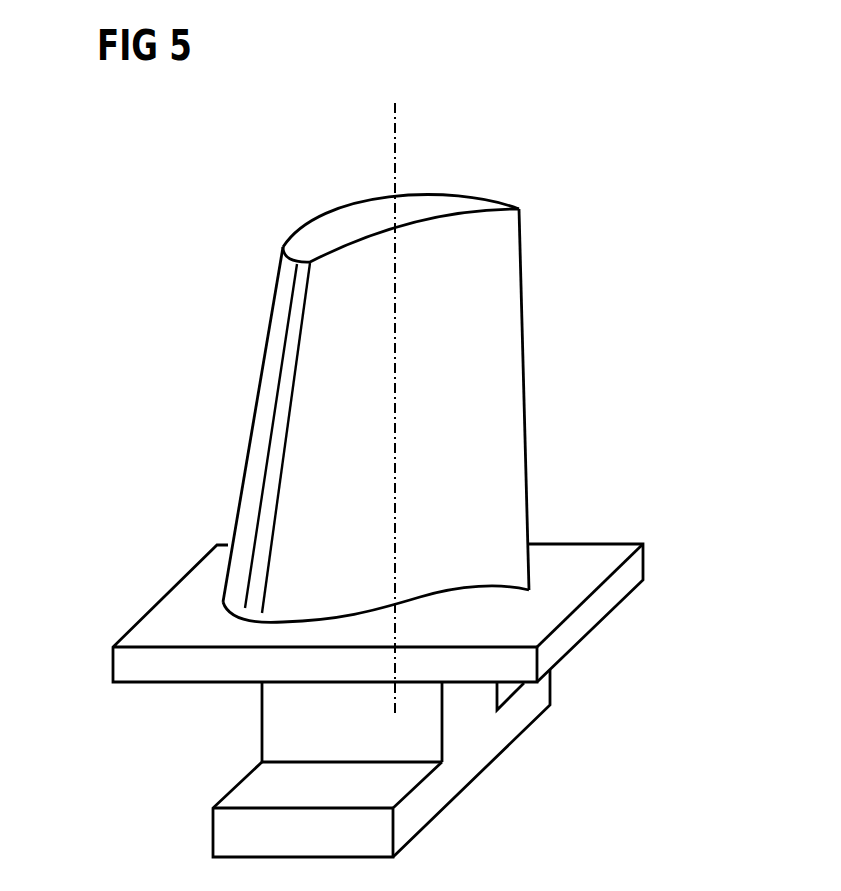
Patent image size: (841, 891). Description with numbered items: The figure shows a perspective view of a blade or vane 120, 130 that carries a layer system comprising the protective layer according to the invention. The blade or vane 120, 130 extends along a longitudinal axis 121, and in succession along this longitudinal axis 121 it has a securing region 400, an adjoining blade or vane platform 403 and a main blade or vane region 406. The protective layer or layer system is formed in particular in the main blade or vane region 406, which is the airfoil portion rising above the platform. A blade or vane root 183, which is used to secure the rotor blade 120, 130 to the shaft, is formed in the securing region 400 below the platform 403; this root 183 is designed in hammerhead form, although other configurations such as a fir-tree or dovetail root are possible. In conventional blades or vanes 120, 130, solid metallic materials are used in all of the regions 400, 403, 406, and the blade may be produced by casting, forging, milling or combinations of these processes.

The longitudinal axis 121 is at (395, 142).
The blade or vane 120 is at (274, 409).
The blade or vane 130 is at (333, 409).
The main blade or vane region 406 is at (258, 465).
The blade or vane platform 403 is at (607, 600).
The securing region 400 is at (389, 763).
The blade or vane root 183 is at (273, 713).